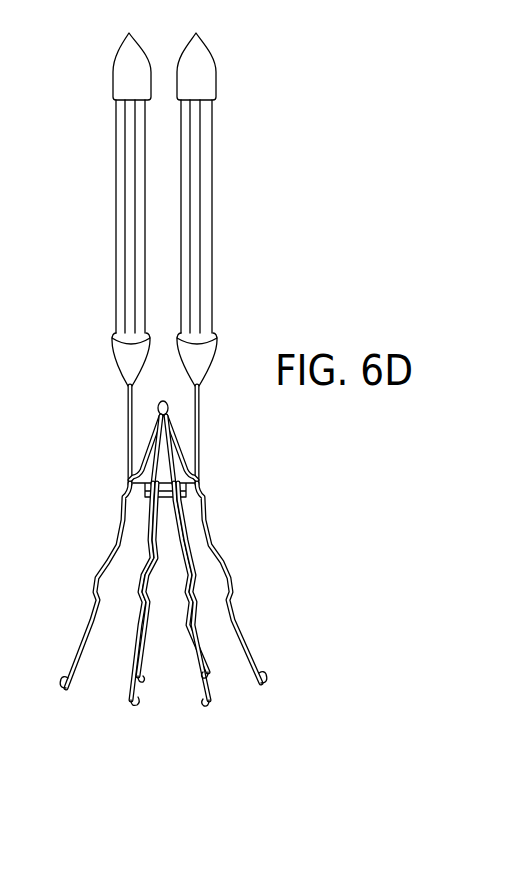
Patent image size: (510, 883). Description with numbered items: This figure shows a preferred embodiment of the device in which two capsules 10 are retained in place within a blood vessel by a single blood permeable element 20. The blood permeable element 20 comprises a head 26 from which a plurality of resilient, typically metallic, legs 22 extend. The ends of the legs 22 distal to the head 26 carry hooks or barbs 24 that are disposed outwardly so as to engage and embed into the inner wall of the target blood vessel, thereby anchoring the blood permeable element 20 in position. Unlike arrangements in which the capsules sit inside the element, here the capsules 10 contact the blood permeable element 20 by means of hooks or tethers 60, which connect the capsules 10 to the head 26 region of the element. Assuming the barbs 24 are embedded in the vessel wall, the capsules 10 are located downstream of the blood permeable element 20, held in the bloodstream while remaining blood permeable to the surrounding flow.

The capsule 10 is at (102, 171).
The blood permeable element 20 is at (185, 609).
The legs 22 is at (211, 540).
The hooks or barbs 24 is at (138, 678).
The head 26 is at (162, 401).
The hooks or tethers 60 is at (128, 433).